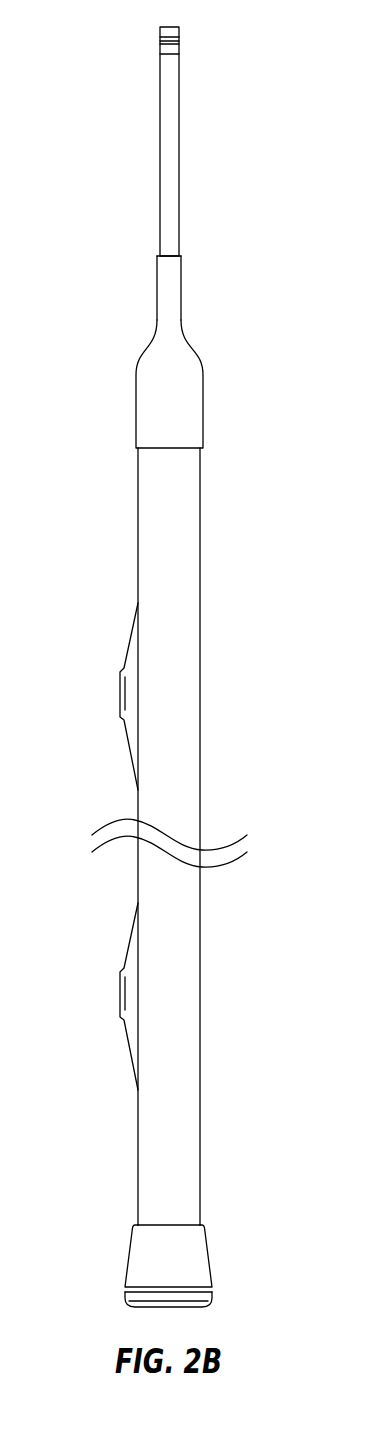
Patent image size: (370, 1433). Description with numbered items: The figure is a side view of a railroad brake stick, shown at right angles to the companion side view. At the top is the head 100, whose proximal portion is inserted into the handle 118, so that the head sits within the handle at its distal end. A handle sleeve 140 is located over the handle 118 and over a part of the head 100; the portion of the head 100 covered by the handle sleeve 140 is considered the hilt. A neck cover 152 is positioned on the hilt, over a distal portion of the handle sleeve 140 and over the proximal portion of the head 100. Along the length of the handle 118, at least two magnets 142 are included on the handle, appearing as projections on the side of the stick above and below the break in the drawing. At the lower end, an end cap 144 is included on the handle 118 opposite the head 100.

The head 100 is at (174, 227).
The neck cover 152 is at (191, 307).
The handle 118 is at (184, 588).
The handle sleeve 140 is at (181, 504).
The magnets 142 is at (122, 693).
The end cap 144 is at (212, 1285).